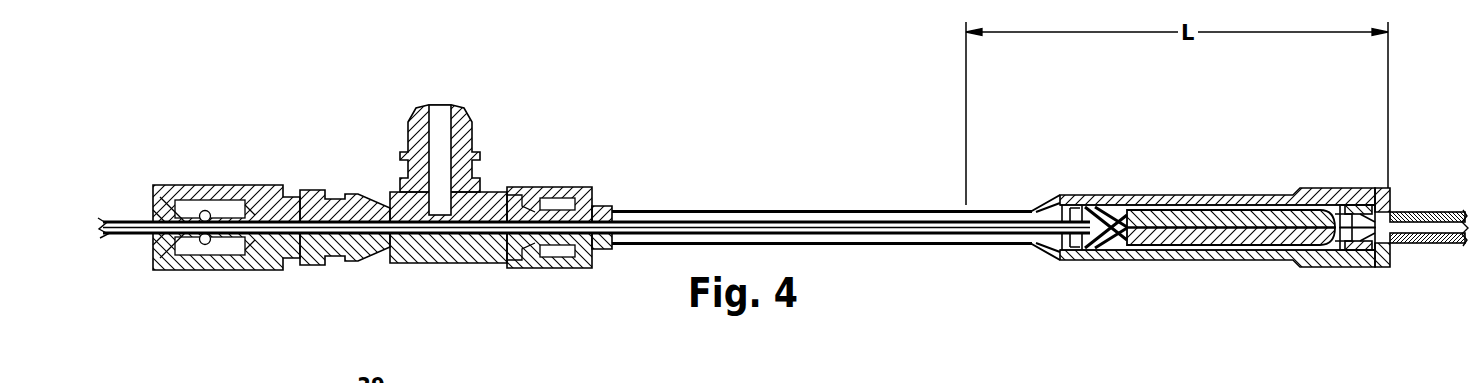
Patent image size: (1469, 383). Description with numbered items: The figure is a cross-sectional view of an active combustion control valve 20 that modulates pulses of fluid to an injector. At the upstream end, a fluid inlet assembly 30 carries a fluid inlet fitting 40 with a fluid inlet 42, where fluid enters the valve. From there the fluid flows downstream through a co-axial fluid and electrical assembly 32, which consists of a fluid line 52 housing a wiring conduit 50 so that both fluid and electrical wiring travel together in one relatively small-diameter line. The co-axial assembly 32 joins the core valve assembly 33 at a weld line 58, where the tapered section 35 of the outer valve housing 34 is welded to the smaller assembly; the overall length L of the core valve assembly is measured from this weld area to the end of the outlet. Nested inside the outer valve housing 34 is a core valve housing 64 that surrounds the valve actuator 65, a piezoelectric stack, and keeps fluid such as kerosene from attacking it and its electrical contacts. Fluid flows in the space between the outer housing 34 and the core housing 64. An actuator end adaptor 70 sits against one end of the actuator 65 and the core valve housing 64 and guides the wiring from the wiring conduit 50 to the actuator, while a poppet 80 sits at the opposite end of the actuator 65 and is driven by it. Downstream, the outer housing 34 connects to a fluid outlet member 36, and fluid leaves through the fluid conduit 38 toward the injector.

The active combustion control valve 20 is at (577, 66).
The fluid inlet assembly 30 is at (280, 116).
The fluid inlet fitting 40 is at (423, 138).
The fluid inlet 42 is at (445, 107).
The co-axial fluid and electrical assembly 32 is at (763, 189).
The fluid line 52 is at (808, 210).
The wiring conduit 50 is at (877, 219).
The weld line 58 is at (962, 212).
The core valve assembly 33 is at (1214, 114).
The tapered section 35 is at (1050, 198).
The outer valve housing 34 is at (1120, 194).
The core valve housing 64 is at (1165, 194).
The actuator end adaptor 70 is at (1087, 195).
The valve actuator 65 is at (1178, 195).
The poppet 80 is at (1333, 192).
The fluid outlet member 36 is at (1385, 189).
The fluid conduit 38 is at (1413, 210).